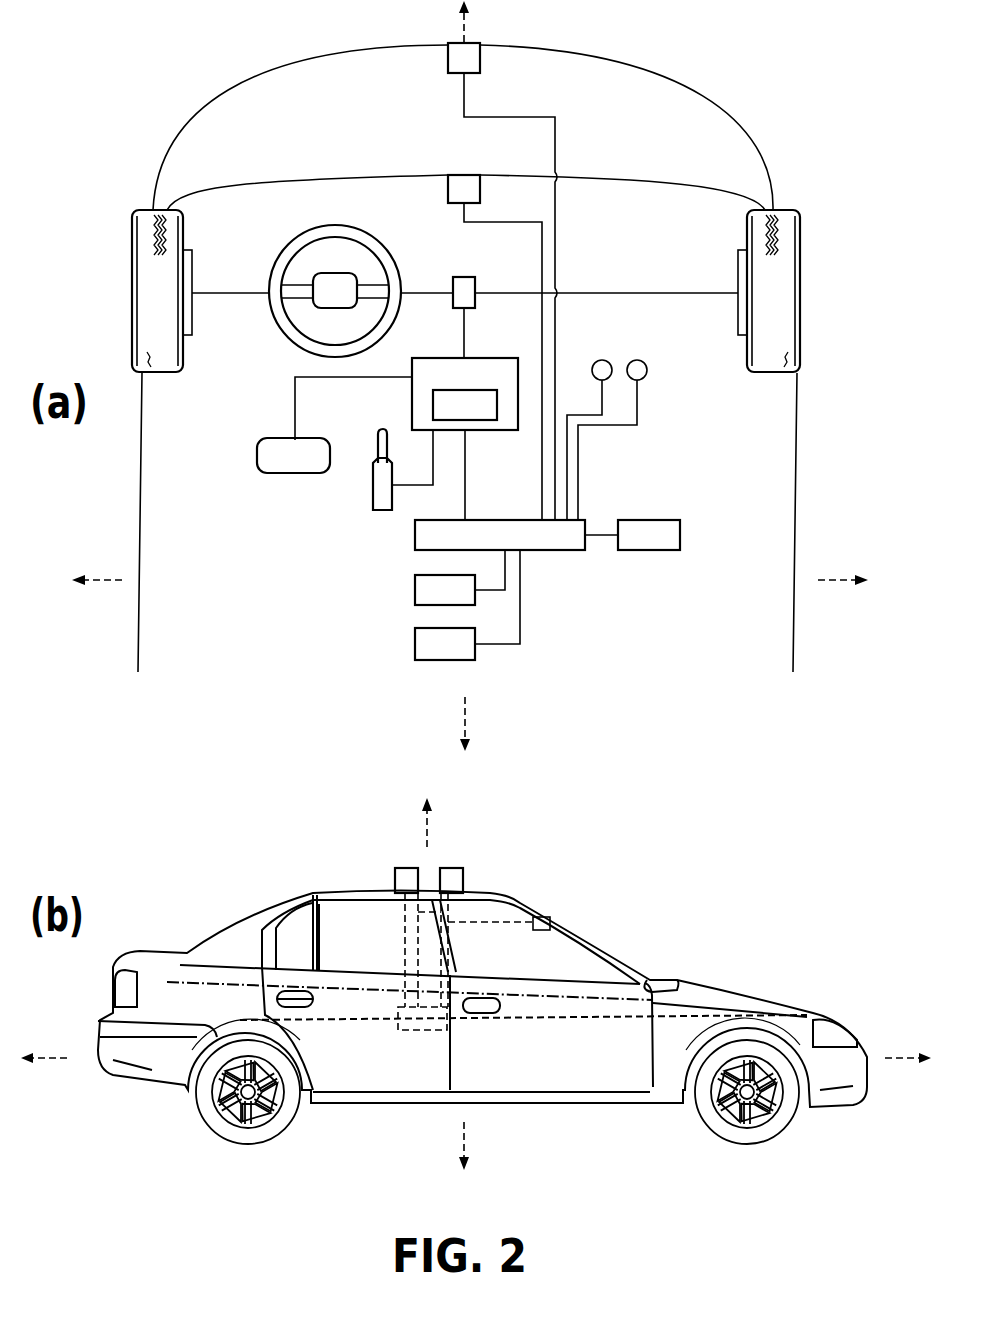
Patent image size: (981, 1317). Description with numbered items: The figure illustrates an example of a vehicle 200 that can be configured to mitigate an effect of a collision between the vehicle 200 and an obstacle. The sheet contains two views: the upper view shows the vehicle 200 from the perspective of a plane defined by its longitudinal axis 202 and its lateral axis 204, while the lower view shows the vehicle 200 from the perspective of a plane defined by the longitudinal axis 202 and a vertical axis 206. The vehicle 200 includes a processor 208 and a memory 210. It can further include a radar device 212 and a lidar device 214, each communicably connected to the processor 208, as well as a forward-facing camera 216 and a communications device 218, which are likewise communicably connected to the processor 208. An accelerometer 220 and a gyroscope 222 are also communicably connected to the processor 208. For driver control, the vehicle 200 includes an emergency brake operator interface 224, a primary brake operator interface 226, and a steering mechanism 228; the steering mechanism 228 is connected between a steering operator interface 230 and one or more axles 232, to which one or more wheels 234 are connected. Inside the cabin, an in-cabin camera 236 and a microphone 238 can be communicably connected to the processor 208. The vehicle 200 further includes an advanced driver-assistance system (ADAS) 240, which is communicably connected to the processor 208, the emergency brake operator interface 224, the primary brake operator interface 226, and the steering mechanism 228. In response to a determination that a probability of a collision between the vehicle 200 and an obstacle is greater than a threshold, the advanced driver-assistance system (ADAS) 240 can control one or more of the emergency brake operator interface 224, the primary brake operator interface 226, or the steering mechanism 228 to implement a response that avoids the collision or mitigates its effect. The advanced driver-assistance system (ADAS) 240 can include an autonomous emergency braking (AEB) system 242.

The vehicle 200 is at (163, 49).
The longitudinal axis 202 is at (474, 28).
The lateral axis 204 is at (103, 578).
The vertical axis 206 is at (440, 824).
The processor 208 is at (572, 552).
The memory 210 is at (683, 535).
The radar device 212 is at (467, 57).
The lidar device 214 is at (465, 879).
The forward-facing camera 216 is at (463, 173).
The communications device 218 is at (393, 879).
The accelerometer 220 is at (415, 590).
The gyroscope 222 is at (415, 643).
The emergency brake operator interface 224 is at (372, 483).
The primary brake operator interface 226 is at (293, 475).
The steering mechanism 228 is at (463, 277).
The steering operator interface 230 is at (338, 230).
The axles 232 is at (205, 292).
The wheels 234 is at (131, 233).
The in-cabin camera 236 is at (598, 361).
The microphone 238 is at (641, 361).
The advanced driver-assistance system (ADAS) 240 is at (483, 358).
The autonomous emergency braking (AEB) system 242 is at (487, 420).